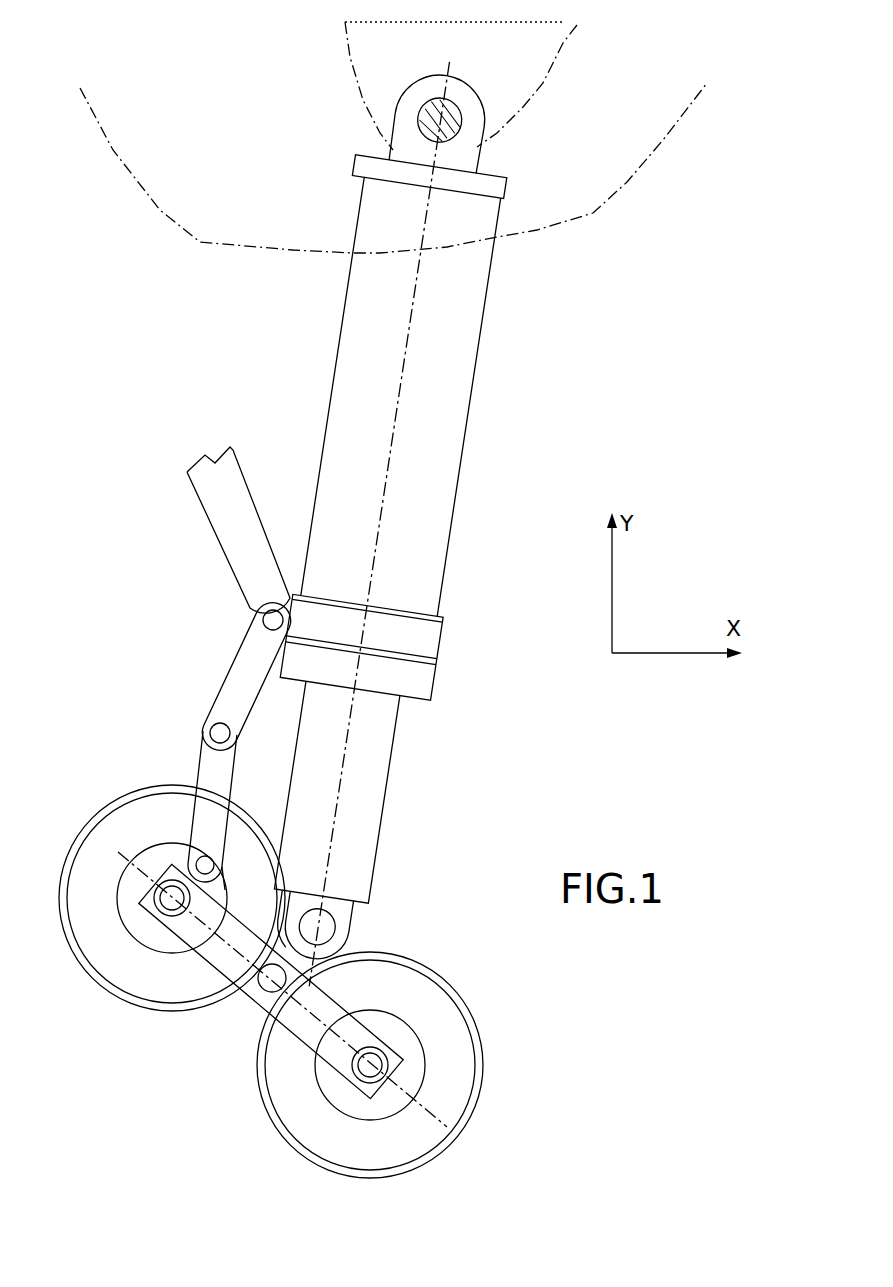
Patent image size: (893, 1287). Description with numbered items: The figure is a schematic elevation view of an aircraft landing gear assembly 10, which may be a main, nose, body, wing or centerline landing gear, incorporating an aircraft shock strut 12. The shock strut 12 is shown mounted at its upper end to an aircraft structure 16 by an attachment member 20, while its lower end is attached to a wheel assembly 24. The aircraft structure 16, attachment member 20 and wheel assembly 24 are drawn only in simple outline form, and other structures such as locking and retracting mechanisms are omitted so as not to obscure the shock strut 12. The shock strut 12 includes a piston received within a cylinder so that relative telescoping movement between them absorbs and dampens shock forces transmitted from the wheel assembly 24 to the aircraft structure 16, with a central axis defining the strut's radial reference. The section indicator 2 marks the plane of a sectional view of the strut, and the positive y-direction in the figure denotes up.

The aircraft landing gear assembly 10 is at (656, 303).
The aircraft shock strut 12 is at (238, 358).
The aircraft structure 16 is at (632, 182).
The attachment member 20 is at (577, 25).
The wheel assembly 24 is at (530, 1044).
The section line of FIG. 2 is at (397, 430).